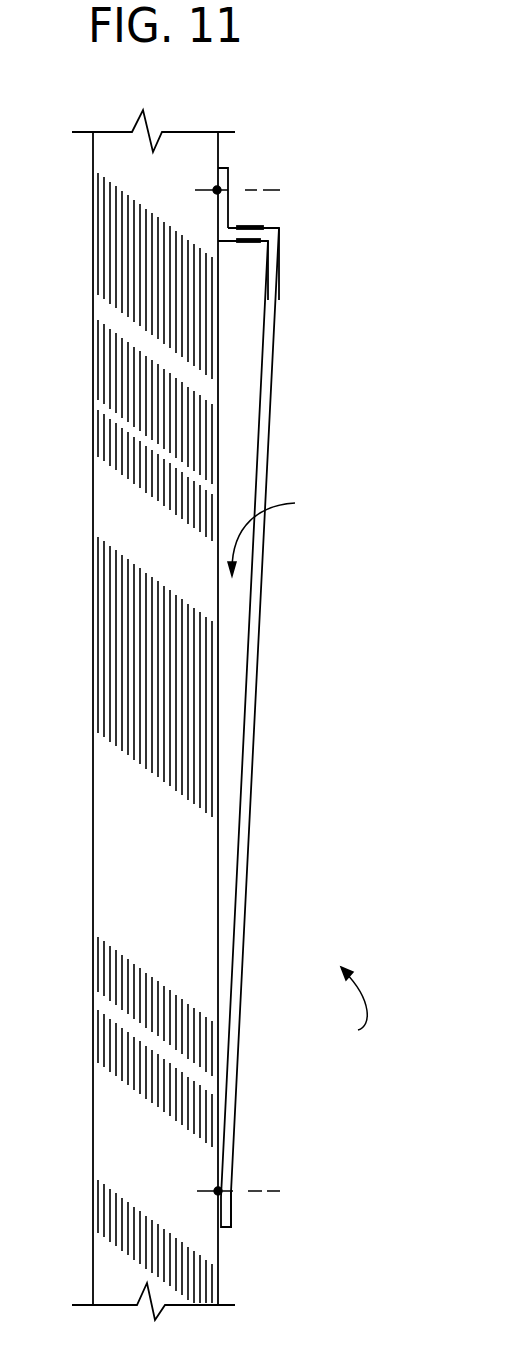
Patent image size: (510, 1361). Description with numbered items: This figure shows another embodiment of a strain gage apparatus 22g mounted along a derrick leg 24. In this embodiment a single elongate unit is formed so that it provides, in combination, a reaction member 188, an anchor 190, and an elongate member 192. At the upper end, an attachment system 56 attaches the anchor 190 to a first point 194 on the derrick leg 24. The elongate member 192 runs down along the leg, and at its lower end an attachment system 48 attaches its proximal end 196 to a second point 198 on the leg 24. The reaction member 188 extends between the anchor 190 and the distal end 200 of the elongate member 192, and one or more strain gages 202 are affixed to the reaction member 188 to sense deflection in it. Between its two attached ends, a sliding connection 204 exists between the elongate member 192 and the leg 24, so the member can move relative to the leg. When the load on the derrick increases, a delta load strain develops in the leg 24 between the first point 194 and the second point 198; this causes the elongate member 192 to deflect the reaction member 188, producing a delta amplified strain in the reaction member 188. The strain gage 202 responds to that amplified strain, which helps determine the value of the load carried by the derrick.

The derrick leg 24 is at (218, 702).
The anchor 190 is at (228, 178).
The reaction member 188 is at (264, 228).
The elongate member 192 is at (243, 913).
The distal end 200 is at (280, 253).
The strain gage 202 is at (243, 243).
The proximal end 196 is at (231, 1212).
The first point 194 is at (215, 189).
The attachment system 56 is at (267, 188).
The second point 198 is at (217, 1190).
The attachment system 48 is at (268, 1191).
The sliding connection 204 is at (285, 533).
The strain gage apparatus 22g is at (336, 1005).